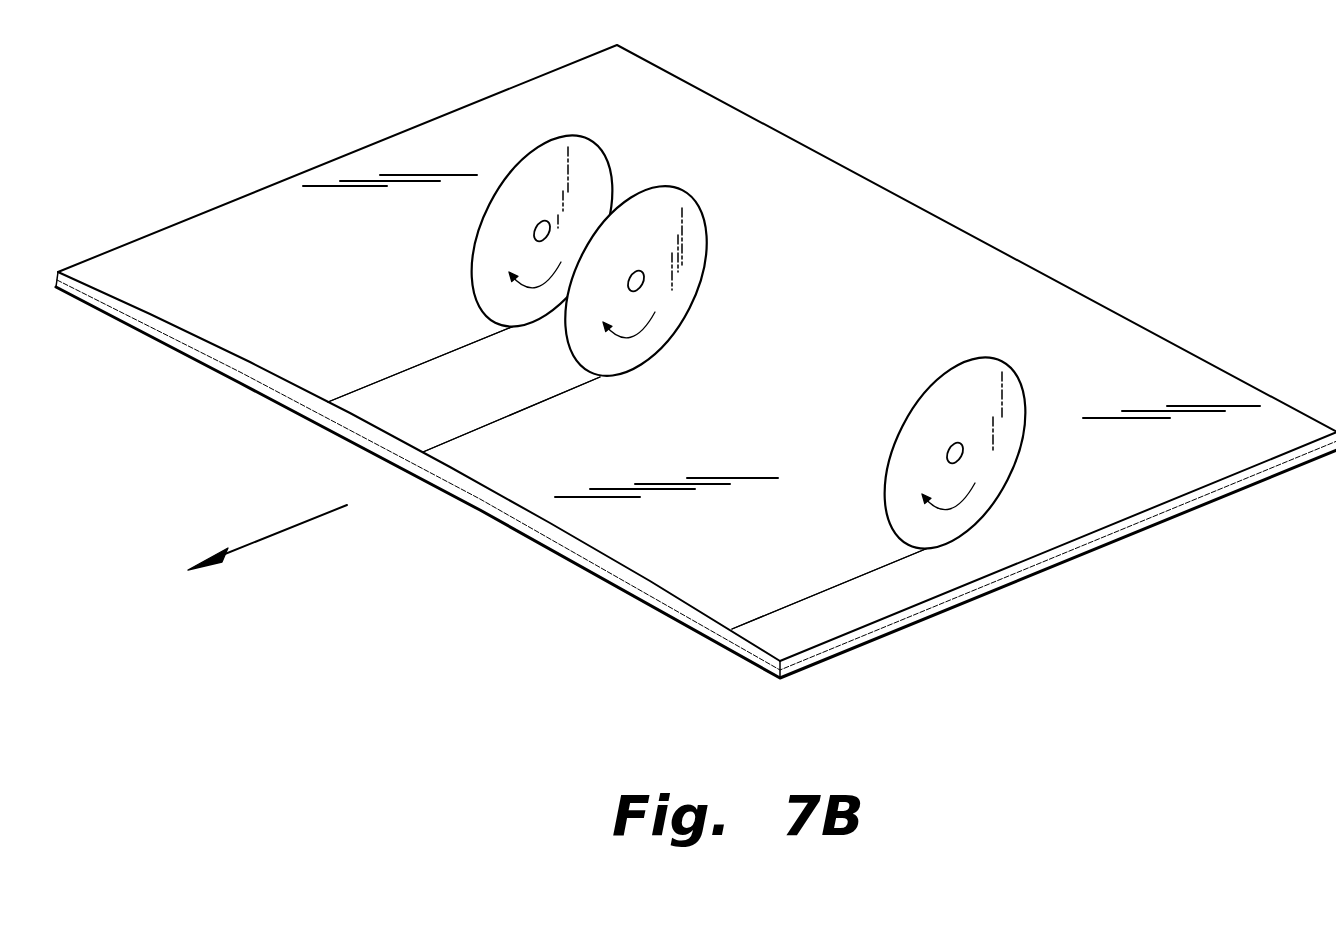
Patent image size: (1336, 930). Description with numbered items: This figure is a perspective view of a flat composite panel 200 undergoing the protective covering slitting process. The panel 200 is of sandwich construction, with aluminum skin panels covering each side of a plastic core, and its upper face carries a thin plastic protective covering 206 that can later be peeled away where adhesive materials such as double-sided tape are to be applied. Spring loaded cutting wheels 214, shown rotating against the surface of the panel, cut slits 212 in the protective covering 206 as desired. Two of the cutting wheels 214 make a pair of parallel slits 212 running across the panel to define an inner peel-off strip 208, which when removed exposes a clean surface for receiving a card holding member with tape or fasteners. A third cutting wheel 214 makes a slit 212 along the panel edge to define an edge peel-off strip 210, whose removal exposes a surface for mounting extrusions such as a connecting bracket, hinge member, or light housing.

The flat composite panel 200 is at (1082, 182).
The protective covering 206 is at (870, 296).
The inner peel-off strip 208 is at (460, 424).
The edge peel-off strip 210 is at (953, 575).
The slits 212 is at (448, 353).
The spring loaded cutting wheels 214 is at (679, 183).